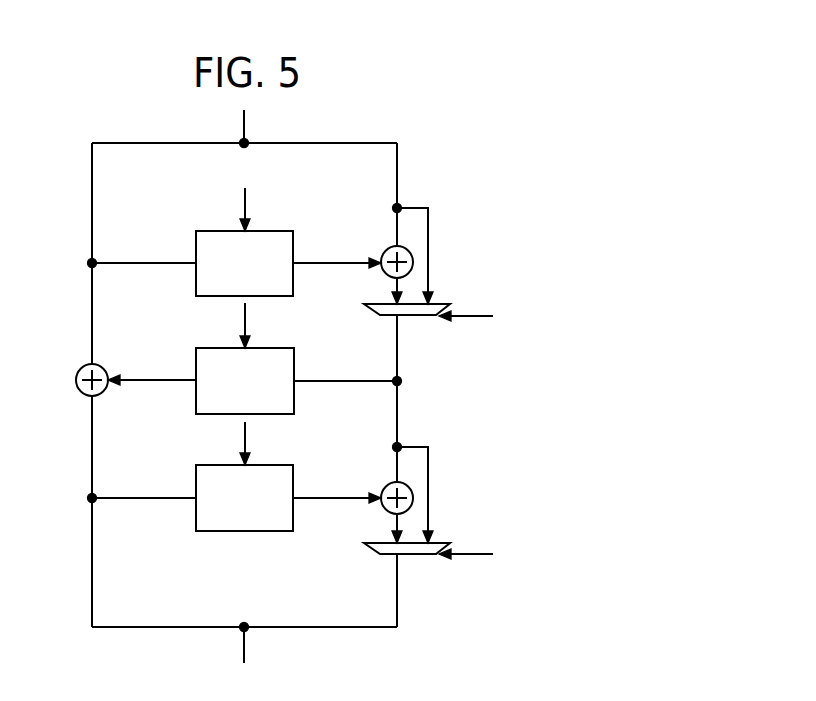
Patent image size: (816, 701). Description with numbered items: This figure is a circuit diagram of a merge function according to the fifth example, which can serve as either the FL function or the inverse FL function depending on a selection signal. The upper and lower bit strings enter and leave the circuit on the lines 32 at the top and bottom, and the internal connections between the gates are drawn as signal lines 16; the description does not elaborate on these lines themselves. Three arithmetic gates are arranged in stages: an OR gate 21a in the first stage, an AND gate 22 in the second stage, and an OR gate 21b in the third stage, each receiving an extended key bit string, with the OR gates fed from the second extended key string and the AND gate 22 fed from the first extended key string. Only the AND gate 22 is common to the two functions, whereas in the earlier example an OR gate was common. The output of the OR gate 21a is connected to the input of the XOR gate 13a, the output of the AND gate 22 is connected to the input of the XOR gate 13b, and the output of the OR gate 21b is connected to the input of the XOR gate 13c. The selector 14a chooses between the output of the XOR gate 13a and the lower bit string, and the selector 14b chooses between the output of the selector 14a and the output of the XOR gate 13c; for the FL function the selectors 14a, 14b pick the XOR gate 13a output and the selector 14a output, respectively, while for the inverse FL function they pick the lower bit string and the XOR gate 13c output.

The bus line 32 is at (250, 135).
The signal line 16 is at (97, 205).
The OR gate 21a is at (288, 230).
The AND gate 22 is at (289, 347).
The OR gate 21b is at (289, 464).
The XOR gate 13a is at (410, 251).
The XOR gate 13b is at (82, 367).
The XOR gate 13c is at (410, 488).
The selector 14a is at (410, 317).
The selector 14b is at (410, 556).